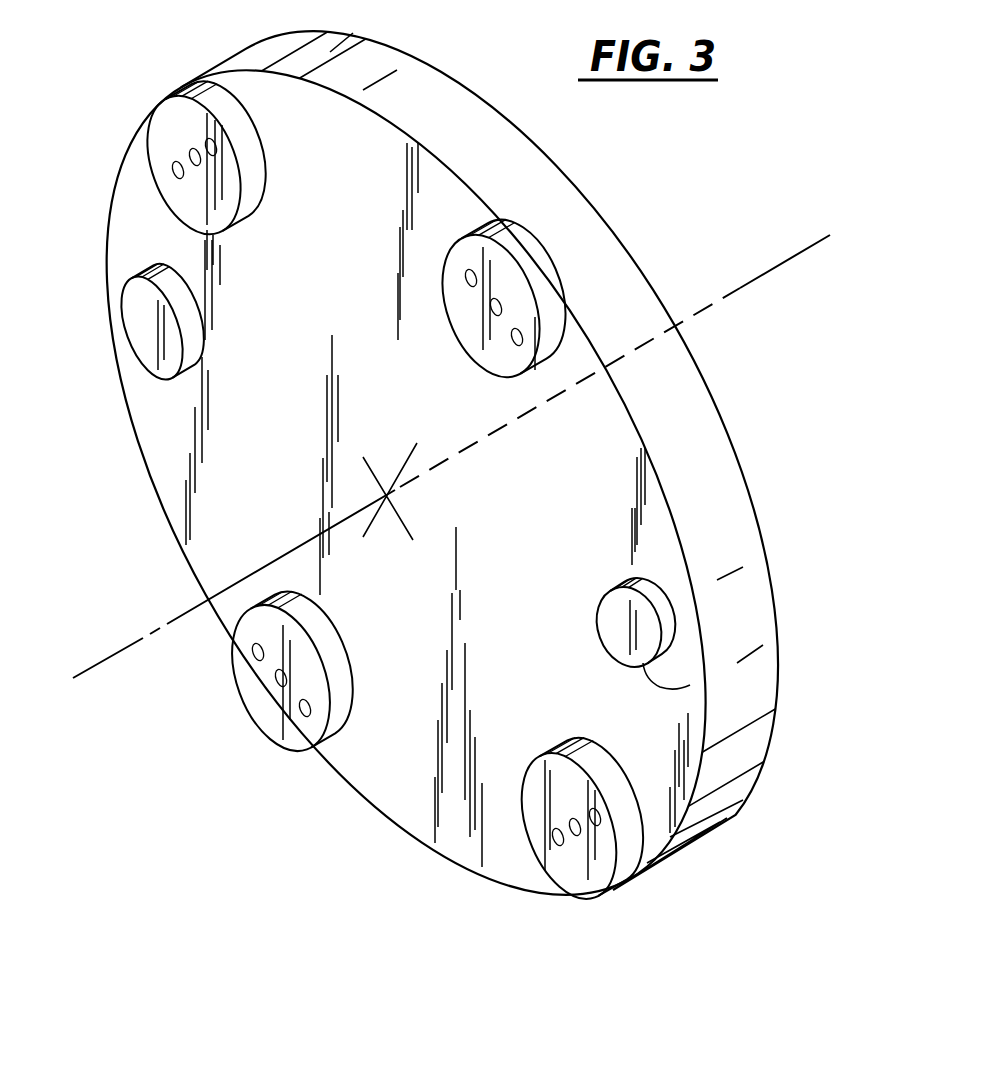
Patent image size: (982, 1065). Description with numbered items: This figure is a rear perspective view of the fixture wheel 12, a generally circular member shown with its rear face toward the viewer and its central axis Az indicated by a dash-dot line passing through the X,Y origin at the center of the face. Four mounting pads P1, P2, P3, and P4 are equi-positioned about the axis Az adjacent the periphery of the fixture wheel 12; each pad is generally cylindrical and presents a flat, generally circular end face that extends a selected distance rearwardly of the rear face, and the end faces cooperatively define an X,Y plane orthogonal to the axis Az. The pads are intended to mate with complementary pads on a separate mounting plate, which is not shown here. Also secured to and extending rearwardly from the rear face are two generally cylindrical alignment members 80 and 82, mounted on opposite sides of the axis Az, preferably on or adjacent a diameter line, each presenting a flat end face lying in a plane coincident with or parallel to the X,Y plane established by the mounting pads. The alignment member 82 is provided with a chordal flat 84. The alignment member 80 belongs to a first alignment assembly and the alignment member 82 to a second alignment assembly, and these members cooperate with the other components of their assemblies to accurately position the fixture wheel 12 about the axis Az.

The fixture wheel 12 is at (755, 500).
The alignment member 80 is at (135, 315).
The alignment member 82 is at (655, 597).
The chordal flat 84 is at (673, 690).
The mounting pad P1 is at (165, 125).
The mounting pad P2 is at (533, 257).
The mounting pad P3 is at (615, 862).
The mounting pad P4 is at (272, 700).
The axis Az is at (46, 682).